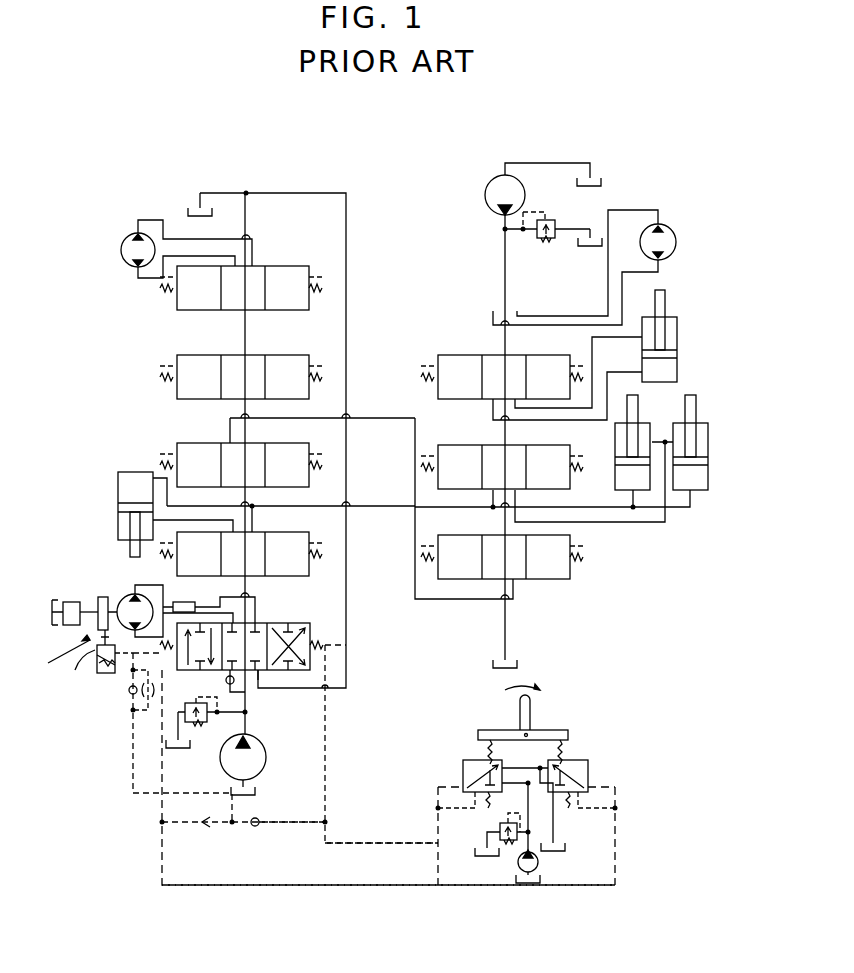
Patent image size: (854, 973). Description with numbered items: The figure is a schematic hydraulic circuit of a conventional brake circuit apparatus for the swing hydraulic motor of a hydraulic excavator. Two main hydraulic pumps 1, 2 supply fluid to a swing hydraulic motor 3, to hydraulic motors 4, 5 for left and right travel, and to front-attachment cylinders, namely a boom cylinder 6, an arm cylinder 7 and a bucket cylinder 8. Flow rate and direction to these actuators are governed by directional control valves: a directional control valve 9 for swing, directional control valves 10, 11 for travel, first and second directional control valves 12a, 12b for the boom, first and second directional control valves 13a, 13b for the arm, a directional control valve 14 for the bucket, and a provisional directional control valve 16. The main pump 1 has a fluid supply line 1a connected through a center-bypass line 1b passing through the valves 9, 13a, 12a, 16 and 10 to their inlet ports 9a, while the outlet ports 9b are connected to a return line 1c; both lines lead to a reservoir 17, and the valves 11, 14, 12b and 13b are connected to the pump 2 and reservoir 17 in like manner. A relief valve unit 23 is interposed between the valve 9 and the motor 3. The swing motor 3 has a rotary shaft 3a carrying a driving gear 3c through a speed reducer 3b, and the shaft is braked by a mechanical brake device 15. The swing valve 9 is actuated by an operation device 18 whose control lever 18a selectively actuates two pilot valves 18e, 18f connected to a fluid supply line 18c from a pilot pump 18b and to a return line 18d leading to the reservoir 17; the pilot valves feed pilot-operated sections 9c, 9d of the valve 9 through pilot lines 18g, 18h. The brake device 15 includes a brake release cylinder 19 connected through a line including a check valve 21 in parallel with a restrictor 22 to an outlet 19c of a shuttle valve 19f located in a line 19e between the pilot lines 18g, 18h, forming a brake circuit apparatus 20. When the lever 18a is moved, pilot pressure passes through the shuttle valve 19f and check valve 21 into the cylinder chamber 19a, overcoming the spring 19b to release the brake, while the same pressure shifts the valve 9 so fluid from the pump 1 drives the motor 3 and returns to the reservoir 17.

The main hydraulic pump 1 is at (266, 757).
The fluid supply line 1a is at (250, 735).
The center-bypass line 1b is at (245, 592).
The return line 1c is at (346, 598).
The main hydraulic pump 2 is at (525, 190).
The swing hydraulic motor 3 is at (130, 596).
The rotary shaft 3a is at (100, 595).
The speed reducer 3b is at (72, 602).
The driving gear 3c is at (51, 600).
The hydraulic motor 4 is at (128, 243).
The hydraulic motor 5 is at (678, 242).
The boom cylinder 6 is at (707, 478).
The arm cylinder 7 is at (128, 472).
The bucket cylinder 8 is at (677, 330).
The directional control valve for swing 9 is at (300, 622).
The inlet port 9a is at (222, 688).
The outlet port 9b is at (258, 672).
The pilot-operated section 9c is at (160, 645).
The pilot-operated section 9d is at (312, 640).
The directional control valve for travel 10 is at (290, 266).
The directional control valve for travel 11 is at (545, 270).
The first directional control valve for boom 12a is at (290, 443).
The second directional control valve for boom 12b is at (540, 445).
The first directional control valve for arm 13a is at (290, 532).
The second directional control valve for arm 13b is at (545, 579).
The directional control valve for bucket 14 is at (455, 355).
The mechanical brake device 15 is at (56, 660).
The provisional directional control valve 16 is at (290, 355).
The reservoir 17 is at (205, 218).
The operation device 18 is at (602, 750).
The control lever 18a is at (568, 735).
The pilot pump 18b is at (518, 864).
The fluid supply line 18c is at (500, 825).
The return line 18d is at (545, 808).
The pilot valve 18e is at (588, 770).
The pilot valve 18f is at (463, 772).
The pilot line 18g is at (238, 885).
The pilot line 18h is at (370, 843).
The brake release cylinder 19 is at (97, 668).
The cylinder chamber 19a is at (70, 672).
The spring 19b is at (128, 696).
The outlet 19c is at (232, 825).
The line 19e is at (280, 822).
The shuttle valve 19f is at (255, 828).
The brake circuit apparatus 20 is at (118, 770).
The check valve 21 is at (130, 710).
The restrictor 22 is at (150, 710).
The relief valve unit 23 is at (214, 610).